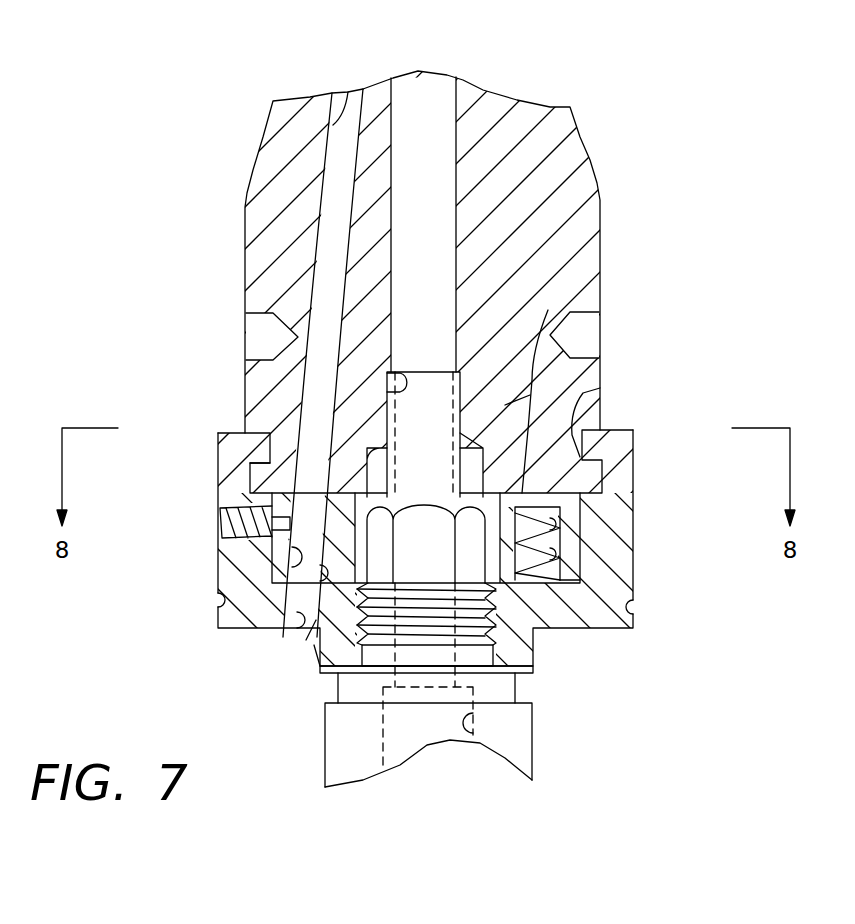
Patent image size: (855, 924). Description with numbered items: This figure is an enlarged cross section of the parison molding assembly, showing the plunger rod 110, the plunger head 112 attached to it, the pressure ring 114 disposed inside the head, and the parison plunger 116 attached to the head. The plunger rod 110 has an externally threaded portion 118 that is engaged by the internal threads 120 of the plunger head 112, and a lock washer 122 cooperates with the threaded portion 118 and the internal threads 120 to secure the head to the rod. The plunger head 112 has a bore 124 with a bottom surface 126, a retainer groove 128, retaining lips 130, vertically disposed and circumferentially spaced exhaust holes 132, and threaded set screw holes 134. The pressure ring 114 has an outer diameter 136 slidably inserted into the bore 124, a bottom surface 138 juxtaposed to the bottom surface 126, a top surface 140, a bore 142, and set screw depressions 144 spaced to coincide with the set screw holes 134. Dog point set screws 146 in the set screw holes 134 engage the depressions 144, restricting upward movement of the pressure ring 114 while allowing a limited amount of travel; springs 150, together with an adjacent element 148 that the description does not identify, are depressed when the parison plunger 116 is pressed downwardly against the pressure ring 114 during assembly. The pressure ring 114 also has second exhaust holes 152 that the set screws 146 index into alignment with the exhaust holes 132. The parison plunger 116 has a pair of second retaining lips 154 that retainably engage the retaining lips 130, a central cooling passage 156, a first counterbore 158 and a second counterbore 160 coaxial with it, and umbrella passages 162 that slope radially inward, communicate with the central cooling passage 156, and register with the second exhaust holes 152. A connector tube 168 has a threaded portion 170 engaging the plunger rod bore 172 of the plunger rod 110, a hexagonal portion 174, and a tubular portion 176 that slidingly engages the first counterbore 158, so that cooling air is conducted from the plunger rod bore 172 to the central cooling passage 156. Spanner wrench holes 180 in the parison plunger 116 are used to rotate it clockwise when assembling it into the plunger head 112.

The plunger rod 110 is at (326, 760).
The plunger head 112 is at (636, 630).
The pressure ring 114 is at (636, 624).
The parison plunger 116 is at (586, 137).
The externally threaded portion 118 is at (535, 672).
The internal threads 120 is at (495, 614).
The lock washer 122 is at (520, 688).
The bore 124 is at (573, 530).
The bottom surface 126 is at (314, 645).
The retainer groove 128 is at (585, 512).
The retaining lips 130 is at (600, 388).
The exhaust holes 132 is at (306, 640).
The threaded set screw holes 134 is at (225, 535).
The outer diameter 136 is at (262, 596).
The bottom surface 138 is at (283, 567).
The top surface 140 is at (530, 395).
The bore 142 is at (572, 312).
The set screw depressions 144 is at (268, 458).
The dog point set screws 146 is at (220, 520).
The spring 148 is at (560, 560).
The springs 150 is at (560, 583).
The second exhaust holes 152 is at (290, 548).
The second retaining lips 154 is at (285, 477).
The central cooling passage 156 is at (450, 96).
The first counterbore 158 is at (387, 366).
The second counterbore 160 is at (367, 448).
The umbrella passages 162 is at (348, 90).
The connector tube 168 is at (422, 370).
The threaded portion 170 is at (412, 628).
The plunger rod bore 172 is at (535, 745).
The hexagonal portion 174 is at (628, 610).
The tubular portion 176 is at (548, 310).
The spanner wrench holes 180 is at (258, 326).